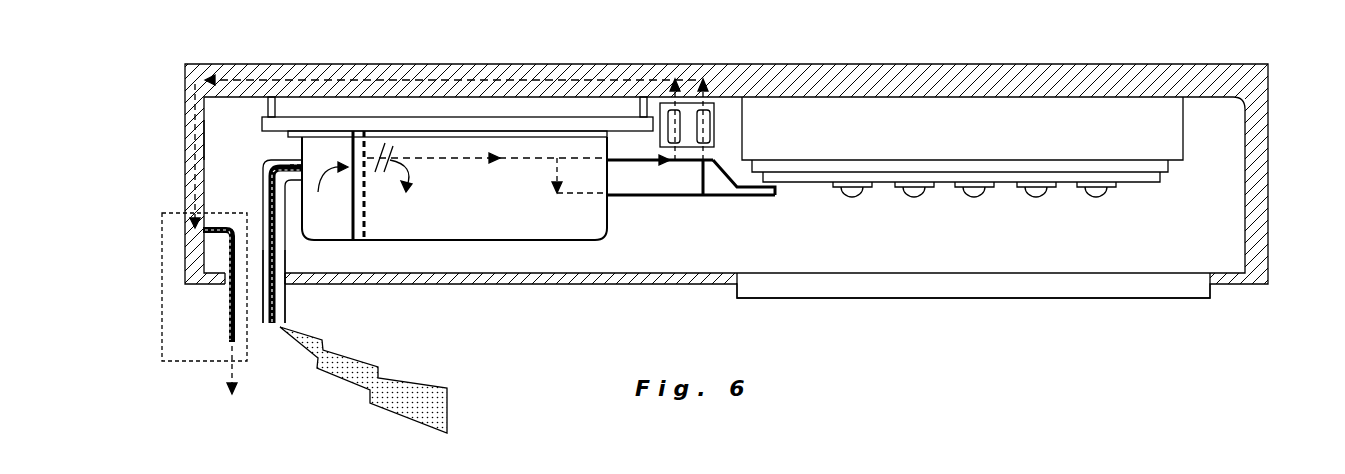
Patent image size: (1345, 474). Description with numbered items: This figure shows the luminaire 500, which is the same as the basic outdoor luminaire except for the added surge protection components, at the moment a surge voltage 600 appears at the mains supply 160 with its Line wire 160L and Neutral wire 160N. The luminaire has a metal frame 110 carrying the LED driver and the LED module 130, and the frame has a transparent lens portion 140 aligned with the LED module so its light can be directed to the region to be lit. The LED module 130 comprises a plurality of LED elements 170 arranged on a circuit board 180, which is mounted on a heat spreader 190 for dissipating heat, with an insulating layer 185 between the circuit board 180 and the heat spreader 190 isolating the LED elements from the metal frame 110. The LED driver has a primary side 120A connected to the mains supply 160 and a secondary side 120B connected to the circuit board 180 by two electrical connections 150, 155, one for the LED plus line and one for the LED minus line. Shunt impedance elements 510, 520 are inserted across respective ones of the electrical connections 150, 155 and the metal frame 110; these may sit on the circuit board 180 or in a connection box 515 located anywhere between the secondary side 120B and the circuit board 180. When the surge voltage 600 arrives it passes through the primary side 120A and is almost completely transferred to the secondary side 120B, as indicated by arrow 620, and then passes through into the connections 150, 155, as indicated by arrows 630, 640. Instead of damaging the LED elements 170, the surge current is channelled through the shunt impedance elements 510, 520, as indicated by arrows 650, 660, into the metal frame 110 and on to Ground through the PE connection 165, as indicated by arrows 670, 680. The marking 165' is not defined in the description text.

The luminaire 500 is at (1262, 52).
The metal frame 110 is at (1010, 83).
The primary side 120A is at (323, 155).
The secondary side 120B is at (503, 200).
The LED module 130 is at (380, 126).
The lens portion 140 is at (1132, 285).
The electrical connection 150 is at (720, 147).
The electrical connection 155 is at (680, 197).
The mains supply 160 is at (285, 343).
The Line wire 160L is at (257, 157).
The Neutral wire 160N is at (287, 307).
The PE connection 165 is at (187, 314).
The external connection region 165' is at (165, 7).
The LED elements 170 is at (1115, 203).
The circuit board 180 is at (1150, 178).
The insulating layer 185 is at (1160, 167).
The heat spreader 190 is at (990, 138).
The shunt impedance element 510 is at (670, 115).
The connection box 515 is at (694, 103).
The shunt impedance element 520 is at (708, 110).
The surge voltage 600 is at (425, 396).
The arrow 620 is at (393, 177).
The arrow 630 is at (487, 157).
The arrow 640 is at (595, 195).
The arrow 650 is at (672, 98).
The arrow 660 is at (706, 97).
The arrow 670 is at (455, 80).
The arrow 680 is at (193, 145).